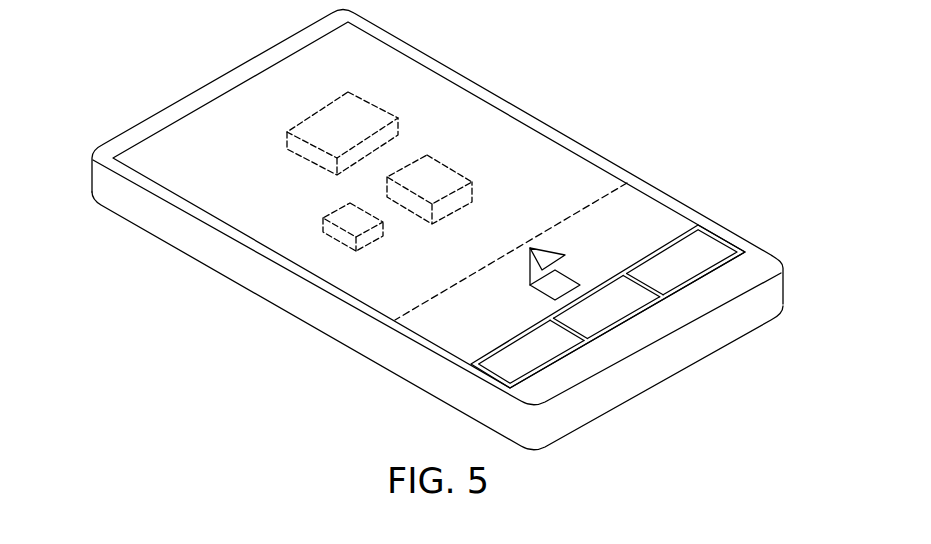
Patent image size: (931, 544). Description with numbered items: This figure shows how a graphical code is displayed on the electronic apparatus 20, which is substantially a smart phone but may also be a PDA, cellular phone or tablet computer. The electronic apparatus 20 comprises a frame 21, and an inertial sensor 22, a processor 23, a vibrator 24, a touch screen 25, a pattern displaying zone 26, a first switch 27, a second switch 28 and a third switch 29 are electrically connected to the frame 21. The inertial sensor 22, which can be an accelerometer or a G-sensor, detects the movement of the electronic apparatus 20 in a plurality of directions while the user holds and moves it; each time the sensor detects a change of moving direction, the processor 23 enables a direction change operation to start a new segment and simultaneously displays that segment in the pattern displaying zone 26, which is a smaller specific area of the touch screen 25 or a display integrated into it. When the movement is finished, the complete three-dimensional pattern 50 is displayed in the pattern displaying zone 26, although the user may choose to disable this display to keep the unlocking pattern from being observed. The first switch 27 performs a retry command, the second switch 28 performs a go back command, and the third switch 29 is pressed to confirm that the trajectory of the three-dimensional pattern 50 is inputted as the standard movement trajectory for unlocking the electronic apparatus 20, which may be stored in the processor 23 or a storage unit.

The electronic apparatus 20 is at (199, 60).
The frame 21 is at (235, 273).
The inertial sensor 22 is at (437, 173).
The processor 23 is at (330, 115).
The vibrator 24 is at (337, 212).
The touch screen 25 is at (468, 105).
The pattern displaying zone 26 is at (624, 312).
The first switch 27 is at (533, 357).
The second switch 28 is at (608, 313).
The third switch 29 is at (690, 267).
The three-dimensional pattern 50 is at (519, 286).